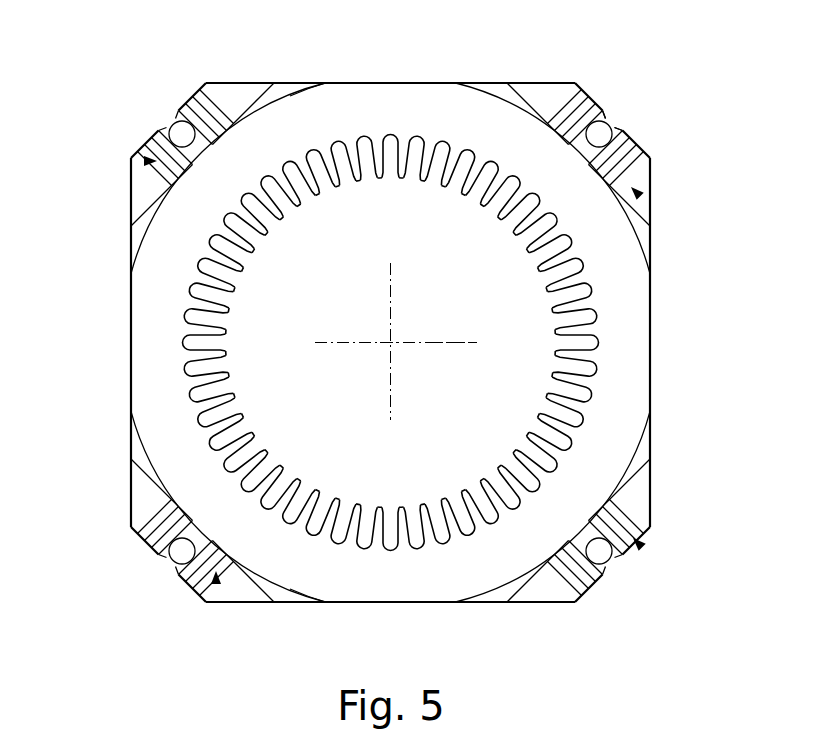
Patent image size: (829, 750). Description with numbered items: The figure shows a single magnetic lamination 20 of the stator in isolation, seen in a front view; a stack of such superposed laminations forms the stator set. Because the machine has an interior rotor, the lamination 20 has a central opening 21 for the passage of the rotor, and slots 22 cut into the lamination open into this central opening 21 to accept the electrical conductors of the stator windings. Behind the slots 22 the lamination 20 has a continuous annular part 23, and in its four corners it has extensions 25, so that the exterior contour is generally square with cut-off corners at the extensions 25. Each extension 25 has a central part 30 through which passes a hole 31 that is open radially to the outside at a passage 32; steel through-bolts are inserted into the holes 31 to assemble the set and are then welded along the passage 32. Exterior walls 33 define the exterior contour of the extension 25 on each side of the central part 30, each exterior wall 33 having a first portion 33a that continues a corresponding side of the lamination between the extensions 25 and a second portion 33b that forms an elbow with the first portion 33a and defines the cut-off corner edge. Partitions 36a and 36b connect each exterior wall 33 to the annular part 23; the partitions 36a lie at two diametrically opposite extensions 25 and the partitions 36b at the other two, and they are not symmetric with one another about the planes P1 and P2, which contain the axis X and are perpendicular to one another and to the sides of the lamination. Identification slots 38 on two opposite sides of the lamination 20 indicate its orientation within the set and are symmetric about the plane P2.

The magnetic lamination 20 is at (651, 322).
The central opening 21 is at (433, 338).
The slot 22 is at (268, 220).
The annular part 23 is at (438, 102).
The extension 25 is at (145, 160).
The central part 30 is at (172, 117).
The hole 31 is at (171, 126).
The passage 32 is at (612, 126).
The exterior wall 33 is at (230, 83).
The first portion 33a is at (276, 83).
The second portion 33b is at (178, 108).
The partition 36a is at (220, 90).
The partition 36b is at (563, 100).
The identification slot 38 is at (330, 83).
The plane P1 is at (390, 292).
The plane P2 is at (440, 343).
The axis X is at (390, 343).